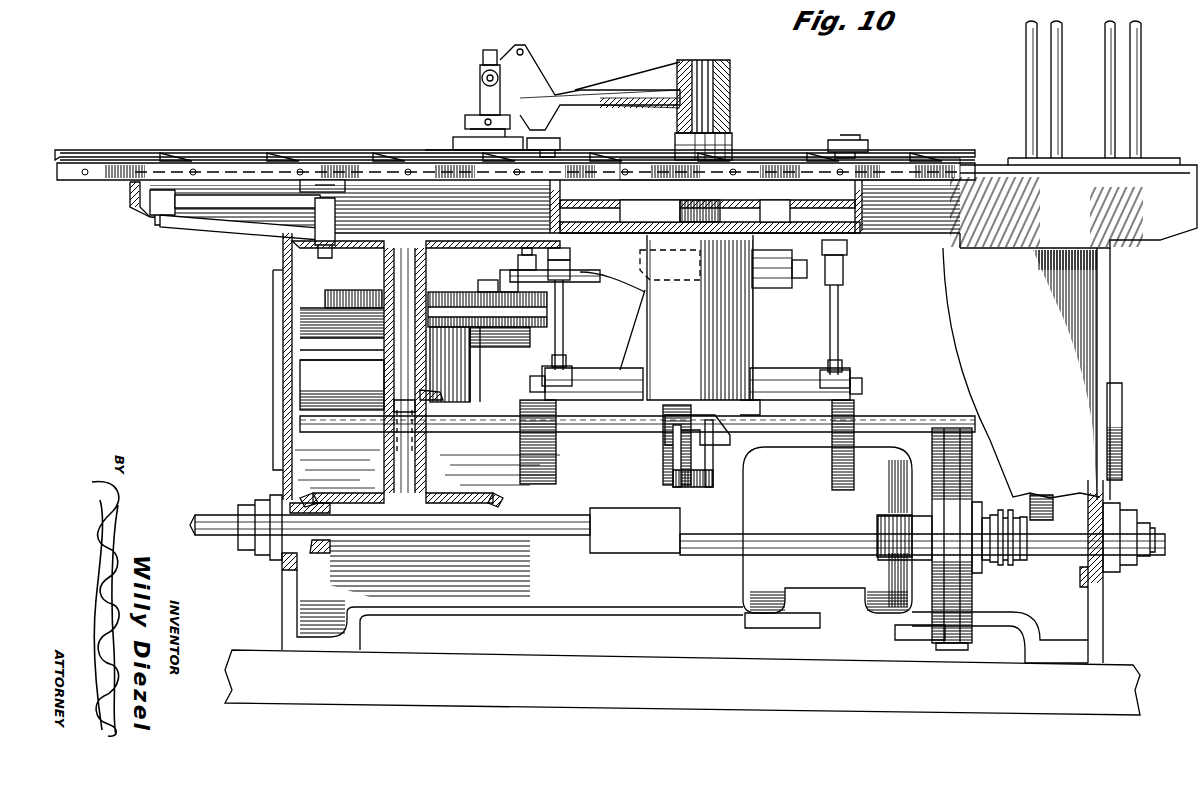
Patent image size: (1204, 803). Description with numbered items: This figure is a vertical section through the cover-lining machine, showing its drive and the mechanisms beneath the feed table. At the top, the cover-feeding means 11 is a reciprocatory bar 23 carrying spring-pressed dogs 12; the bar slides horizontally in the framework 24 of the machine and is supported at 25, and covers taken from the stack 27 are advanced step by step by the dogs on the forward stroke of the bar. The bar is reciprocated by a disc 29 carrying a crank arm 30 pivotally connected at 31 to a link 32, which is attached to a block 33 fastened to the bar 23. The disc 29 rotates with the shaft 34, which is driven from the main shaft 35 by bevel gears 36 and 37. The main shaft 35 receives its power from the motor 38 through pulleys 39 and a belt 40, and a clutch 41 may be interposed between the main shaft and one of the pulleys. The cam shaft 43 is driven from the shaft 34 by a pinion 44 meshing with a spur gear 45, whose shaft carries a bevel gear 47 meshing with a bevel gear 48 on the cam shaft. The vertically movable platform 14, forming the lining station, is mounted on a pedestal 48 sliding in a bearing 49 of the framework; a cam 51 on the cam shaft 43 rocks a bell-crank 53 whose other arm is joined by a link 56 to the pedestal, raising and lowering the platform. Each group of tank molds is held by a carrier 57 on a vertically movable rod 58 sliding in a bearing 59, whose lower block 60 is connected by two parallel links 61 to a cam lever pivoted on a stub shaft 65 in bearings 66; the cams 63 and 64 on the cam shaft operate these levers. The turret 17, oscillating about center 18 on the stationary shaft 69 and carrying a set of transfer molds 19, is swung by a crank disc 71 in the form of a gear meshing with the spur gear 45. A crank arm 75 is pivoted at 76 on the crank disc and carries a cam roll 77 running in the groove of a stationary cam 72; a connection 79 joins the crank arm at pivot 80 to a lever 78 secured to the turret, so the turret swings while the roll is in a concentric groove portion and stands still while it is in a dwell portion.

The cover-feeding means 11 is at (100, 150).
The dogs 12 is at (163, 152).
The vertically movable platform 14 is at (752, 178).
The turret 17 is at (630, 75).
The center 18 is at (681, 55).
The set of transfer molds 19 is at (446, 146).
The reciprocatory bar 23 is at (105, 178).
The framework 24 is at (1110, 305).
The bar support 25 is at (132, 200).
The stack 27 is at (1083, 89).
The disc 29 is at (437, 250).
The crank arm 30 is at (240, 222).
The pivot connection 31 is at (162, 225).
The link 32 is at (205, 205).
The block 33 is at (328, 165).
The shaft 34 is at (392, 258).
The main shaft 35 is at (545, 536).
The bevel gear 36 is at (322, 550).
The bevel gear 37 is at (378, 492).
The motor 38 is at (827, 530).
The pulleys 39 is at (972, 475).
The belt 40 is at (953, 652).
The clutch 41 is at (1005, 563).
The cam shaft 43 is at (590, 432).
The pinion 44 is at (430, 296).
The spur gear 45 is at (340, 298).
The bevel gear 47 is at (442, 396).
The bevel gear / pedestal 48 is at (670, 206).
The bearing 49 is at (690, 325).
The cam 51 is at (663, 460).
The bell-crank 53 is at (688, 488).
The link 56 is at (712, 462).
The carrier 57 is at (562, 146).
The vertically movable rod 58 is at (565, 304).
The bearing 59 is at (572, 262).
The block 60 is at (565, 335).
The parallel links 61 is at (575, 356).
The cam 63 is at (540, 484).
The cam 64 is at (840, 490).
The stub shaft 65 is at (532, 386).
The bearings 66 is at (697, 384).
The stationary shaft 69 is at (708, 58).
The crank disc 71 is at (555, 312).
The stationary cam 72 is at (475, 340).
The crank arm 75 is at (504, 290).
The pivot 76 is at (486, 280).
The cam roll 77 is at (500, 328).
The lever 78 is at (780, 262).
The connection 79 is at (637, 276).
The pivot 80 is at (524, 252).